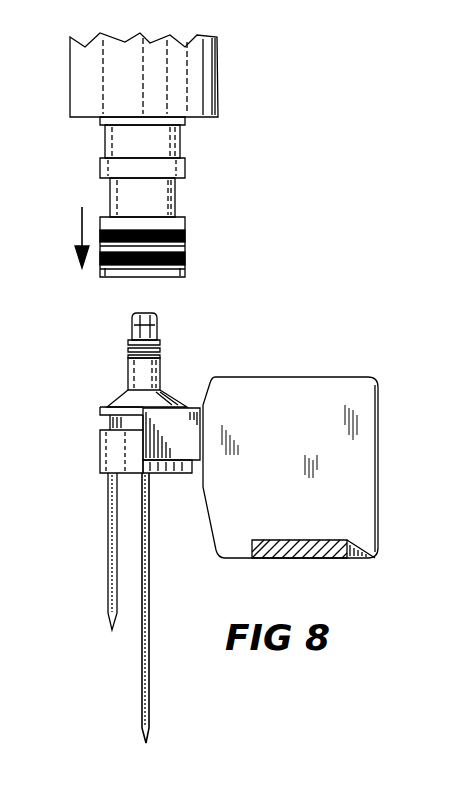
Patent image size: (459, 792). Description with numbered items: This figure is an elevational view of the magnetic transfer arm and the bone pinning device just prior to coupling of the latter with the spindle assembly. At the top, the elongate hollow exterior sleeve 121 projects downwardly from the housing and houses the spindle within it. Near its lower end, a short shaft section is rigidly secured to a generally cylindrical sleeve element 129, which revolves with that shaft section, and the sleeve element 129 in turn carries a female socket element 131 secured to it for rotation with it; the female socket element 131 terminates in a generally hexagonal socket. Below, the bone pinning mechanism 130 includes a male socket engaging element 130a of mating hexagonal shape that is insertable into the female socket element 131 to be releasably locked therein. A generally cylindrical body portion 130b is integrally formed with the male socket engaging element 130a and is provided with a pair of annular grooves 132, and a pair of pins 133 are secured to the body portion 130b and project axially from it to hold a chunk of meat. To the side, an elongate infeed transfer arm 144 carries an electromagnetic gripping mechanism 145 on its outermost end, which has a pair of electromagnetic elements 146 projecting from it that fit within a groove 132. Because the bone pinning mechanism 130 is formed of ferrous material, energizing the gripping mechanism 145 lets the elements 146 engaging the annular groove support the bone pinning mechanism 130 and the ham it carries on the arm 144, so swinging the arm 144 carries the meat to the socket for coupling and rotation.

The exterior sleeve 121 is at (220, 76).
The sleeve element 129 is at (180, 142).
The female socket element 131 is at (185, 236).
The bone pinning mechanism 130 is at (128, 517).
The male socket engaging element 130a is at (128, 370).
The body portion 130b is at (100, 455).
The annular groove 132 is at (108, 423).
The pins 133 is at (108, 535).
The electromagnetic elements 146 is at (197, 413).
The electromagnetic gripping mechanism 145 is at (325, 377).
The infeed transfer arm 144 is at (300, 558).